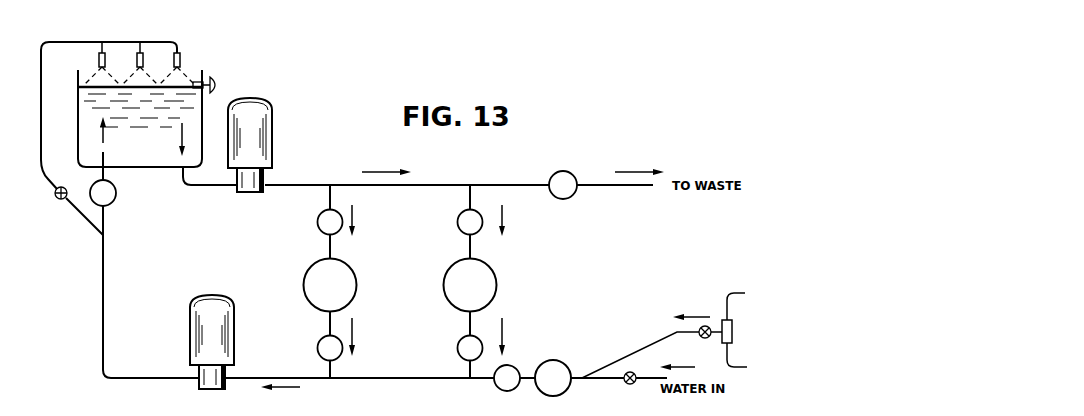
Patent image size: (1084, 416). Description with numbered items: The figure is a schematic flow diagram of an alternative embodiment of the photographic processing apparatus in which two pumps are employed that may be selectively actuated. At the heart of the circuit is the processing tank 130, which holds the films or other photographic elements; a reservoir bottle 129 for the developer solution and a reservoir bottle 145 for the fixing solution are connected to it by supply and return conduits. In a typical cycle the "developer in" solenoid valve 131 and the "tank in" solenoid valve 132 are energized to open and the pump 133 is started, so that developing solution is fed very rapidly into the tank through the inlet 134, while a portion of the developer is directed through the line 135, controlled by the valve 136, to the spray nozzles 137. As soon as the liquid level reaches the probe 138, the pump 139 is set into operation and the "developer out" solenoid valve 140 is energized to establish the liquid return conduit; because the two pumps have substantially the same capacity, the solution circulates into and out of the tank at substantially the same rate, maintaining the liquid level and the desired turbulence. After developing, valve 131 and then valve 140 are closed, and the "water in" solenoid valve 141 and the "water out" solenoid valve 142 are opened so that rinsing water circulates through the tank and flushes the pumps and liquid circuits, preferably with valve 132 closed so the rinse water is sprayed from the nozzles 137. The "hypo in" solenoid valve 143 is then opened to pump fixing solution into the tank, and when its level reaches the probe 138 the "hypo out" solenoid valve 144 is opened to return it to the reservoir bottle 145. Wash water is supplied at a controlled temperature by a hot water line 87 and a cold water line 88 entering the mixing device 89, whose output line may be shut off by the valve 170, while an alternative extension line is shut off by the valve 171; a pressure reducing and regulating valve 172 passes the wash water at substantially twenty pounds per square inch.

The reservoir bottle 129 is at (355, 285).
The processing tank 130 is at (168, 167).
The "developer in" solenoid valve 131 is at (320, 338).
The "tank in" solenoid valve 132 is at (116, 199).
The pump 133 is at (197, 384).
The inlet 134 is at (104, 158).
The line 135 is at (41, 119).
The valve 136 is at (55, 198).
The spray nozzles 137 is at (176, 52).
The probe 138 is at (217, 88).
The pump 139 is at (266, 180).
The "developer out" solenoid valve 140 is at (320, 214).
The "water in" solenoid valve 141 is at (514, 366).
The "water out" solenoid valve 142 is at (566, 171).
The "hypo in" solenoid valve 143 is at (458, 338).
The "hypo out" solenoid valve 144 is at (460, 214).
The reservoir bottle 145 is at (489, 266).
The valve 170 is at (688, 332).
The valve 171 is at (634, 372).
The pressure reducing and regulating valve 172 is at (560, 362).
The hot water line 87 is at (747, 293).
The cold water line 88 is at (750, 366).
The mixing device 89 is at (732, 326).